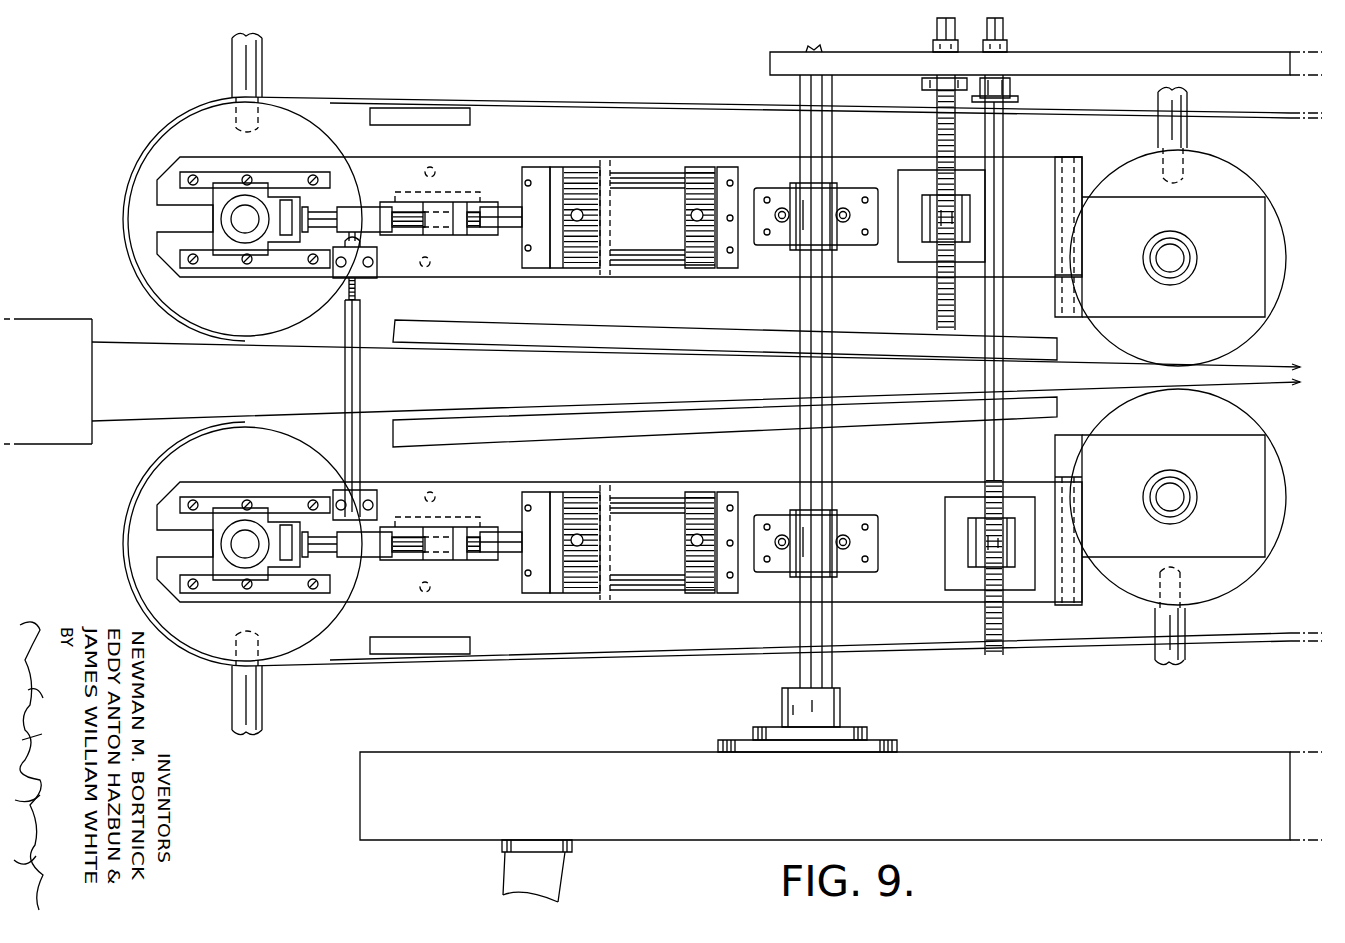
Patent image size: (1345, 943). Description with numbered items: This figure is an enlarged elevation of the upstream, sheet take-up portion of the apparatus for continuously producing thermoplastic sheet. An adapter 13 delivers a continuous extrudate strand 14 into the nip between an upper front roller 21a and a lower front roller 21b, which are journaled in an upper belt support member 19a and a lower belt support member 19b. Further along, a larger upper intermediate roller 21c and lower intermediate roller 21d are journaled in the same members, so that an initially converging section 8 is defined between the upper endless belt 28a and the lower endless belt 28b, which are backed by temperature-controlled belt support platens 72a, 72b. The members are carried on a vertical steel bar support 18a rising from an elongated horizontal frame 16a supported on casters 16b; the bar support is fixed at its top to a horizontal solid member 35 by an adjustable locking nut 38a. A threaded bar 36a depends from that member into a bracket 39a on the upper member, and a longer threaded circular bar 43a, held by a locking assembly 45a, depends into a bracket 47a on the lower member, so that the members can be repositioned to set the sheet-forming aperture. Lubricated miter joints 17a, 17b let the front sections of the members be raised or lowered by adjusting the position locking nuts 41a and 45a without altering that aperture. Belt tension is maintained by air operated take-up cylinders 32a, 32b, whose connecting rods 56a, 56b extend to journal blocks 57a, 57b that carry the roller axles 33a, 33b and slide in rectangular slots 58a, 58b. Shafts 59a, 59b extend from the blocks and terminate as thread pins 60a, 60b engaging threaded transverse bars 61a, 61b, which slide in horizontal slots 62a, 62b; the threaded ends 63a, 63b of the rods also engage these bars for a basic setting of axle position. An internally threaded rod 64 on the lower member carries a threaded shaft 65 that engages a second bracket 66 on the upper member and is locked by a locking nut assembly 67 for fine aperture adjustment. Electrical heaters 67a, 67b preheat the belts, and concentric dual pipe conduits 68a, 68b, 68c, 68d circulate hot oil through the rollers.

The initially converging section 8 is at (545, 390).
The adapter 13 is at (31, 391).
The extrudate strand 14 is at (124, 391).
The horizontal frame 16a is at (510, 795).
The casters 16b is at (489, 882).
The miter joint 17a is at (1068, 161).
The miter joint 17b is at (1060, 607).
The vertical steel bar support 18a is at (800, 678).
The upper belt support member 19a is at (1224, 280).
The lower belt support member 19b is at (1224, 520).
The upper front roller 21a is at (165, 147).
The lower front roller 21b is at (216, 544).
The upper intermediate roller 21c is at (1215, 343).
The lower intermediate roller 21d is at (1210, 410).
The upper endless belt 28a is at (600, 101).
The lower endless belt 28b is at (722, 560).
The upper air operated take-up cylinder 32a is at (672, 185).
The lower air operated take-up cylinder 32b is at (644, 542).
The upper roller axle 33a is at (240, 219).
The lower roller axle 33b is at (199, 544).
The horizontal solid member 35 is at (792, 57).
The threaded bar 36a is at (937, 138).
The adjustable locking nut 38a is at (820, 50).
The bracket 39a is at (938, 228).
The position locking nut 41a is at (934, 52).
The elongated threaded circular bar 43a is at (1005, 312).
The locking assembly 45a is at (1010, 48).
The bracket 47a is at (947, 550).
The upper connecting rod 56a is at (515, 205).
The lower connecting rod 56b is at (515, 524).
The upper journal block 57a is at (292, 200).
The lower journal block 57b is at (258, 572).
The upper rectangular slot 58a is at (157, 205).
The lower rectangular slot 58b is at (576, 542).
The upper shaft 59a is at (358, 216).
The lower shaft 59b is at (347, 559).
The upper thread pin 60a is at (400, 208).
The lower thread pin 60b is at (402, 517).
The upper threaded transverse bar 61a is at (458, 229).
The lower threaded transverse bar 61b is at (439, 508).
The upper horizontal slot 62a is at (420, 196).
The lower horizontal slot 62b is at (437, 548).
The upper threaded end 63a is at (478, 236).
The lower threaded end 63b is at (486, 561).
The internally threaded rod 64 is at (368, 492).
The threaded shaft 65 is at (358, 303).
The second bracket 66 is at (372, 281).
The locking nut assembly 67 is at (372, 244).
The upper electrical heater 67a is at (432, 108).
The lower electrical heater 67b is at (420, 669).
The concentric dual pipe conduit 68a is at (232, 80).
The concentric dual pipe conduit 68b is at (217, 683).
The concentric dual pipe conduit 68c is at (1185, 136).
The concentric dual pipe conduit 68d is at (1188, 618).
The upper belt support platen 72a is at (620, 334).
The lower belt support platen 72b is at (622, 436).